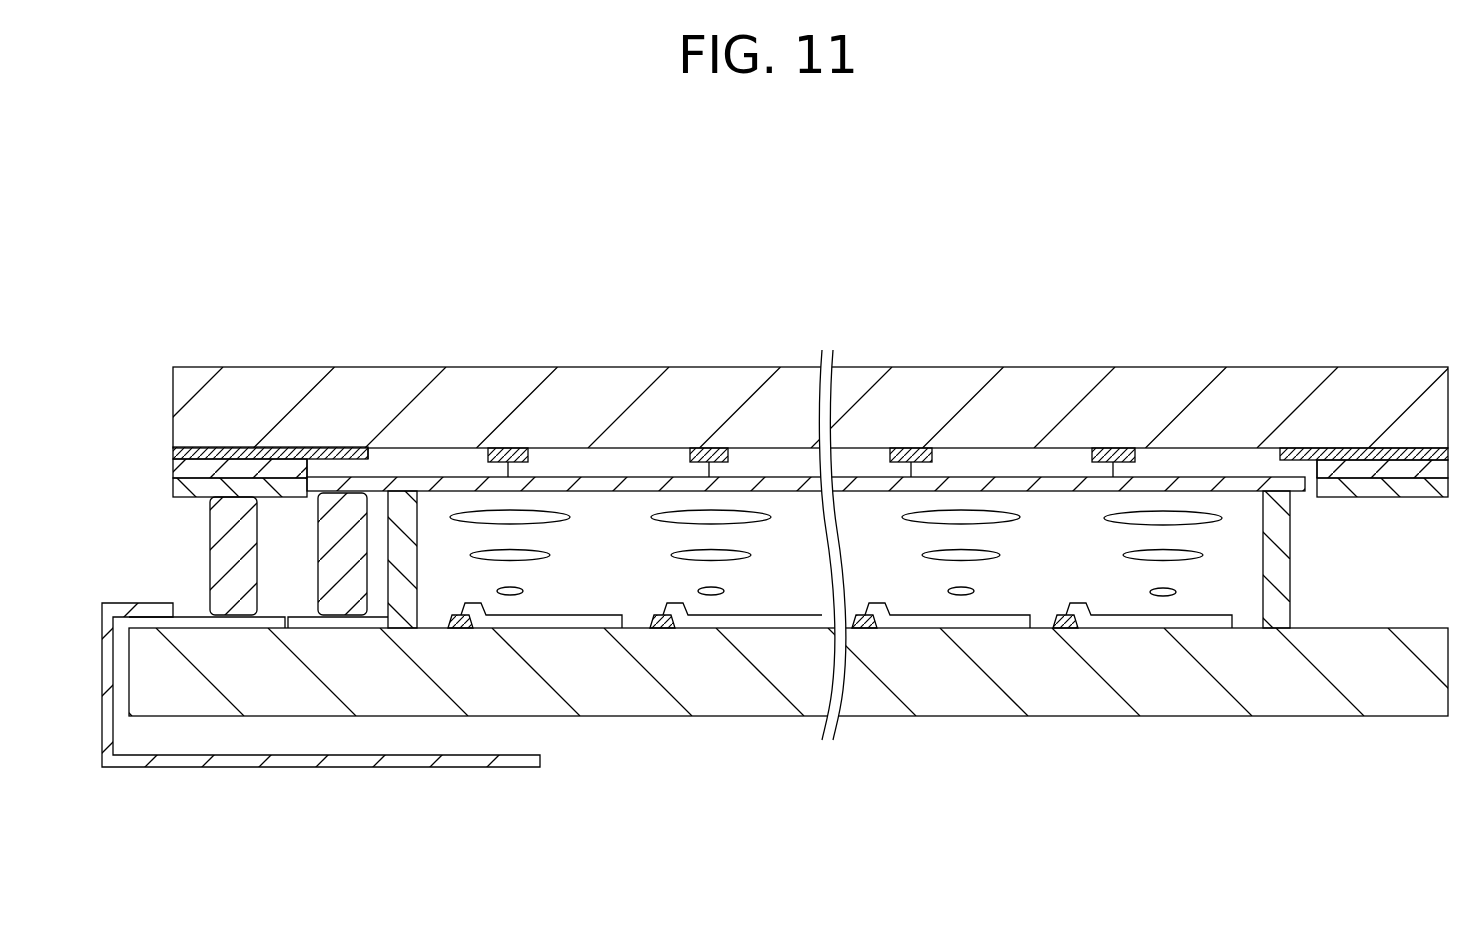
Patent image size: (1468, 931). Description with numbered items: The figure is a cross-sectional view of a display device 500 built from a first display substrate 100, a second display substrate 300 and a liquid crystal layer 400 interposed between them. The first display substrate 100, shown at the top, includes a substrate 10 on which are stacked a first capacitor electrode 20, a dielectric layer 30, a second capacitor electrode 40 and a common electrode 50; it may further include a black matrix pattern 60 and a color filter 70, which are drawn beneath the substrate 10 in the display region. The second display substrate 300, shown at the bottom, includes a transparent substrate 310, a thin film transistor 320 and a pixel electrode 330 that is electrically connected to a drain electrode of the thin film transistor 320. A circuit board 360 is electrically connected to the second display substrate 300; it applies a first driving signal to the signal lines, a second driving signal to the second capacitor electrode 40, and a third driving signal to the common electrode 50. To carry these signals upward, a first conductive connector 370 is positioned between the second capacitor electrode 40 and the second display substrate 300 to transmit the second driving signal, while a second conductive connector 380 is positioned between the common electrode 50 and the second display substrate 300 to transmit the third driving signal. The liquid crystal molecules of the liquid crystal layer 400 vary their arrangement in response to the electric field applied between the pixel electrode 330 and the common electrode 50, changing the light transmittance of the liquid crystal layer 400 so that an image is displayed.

The substrate 10 is at (181, 391).
The first capacitor electrode 20 is at (180, 457).
The dielectric layer 30 is at (180, 469).
The second capacitor electrode 40 is at (182, 486).
The common electrode 50 is at (590, 487).
The black matrix pattern 60 is at (709, 449).
The color filter 70 is at (652, 461).
The first display substrate 100 is at (451, 353).
The second display substrate 300 is at (680, 729).
The transparent substrate 310 is at (985, 697).
The thin film transistor 320 is at (1067, 626).
The pixel electrode 330 is at (1160, 624).
The circuit board 360 is at (167, 764).
The first conductive connector 370 is at (218, 537).
The second conductive connector 380 is at (328, 568).
The liquid crystal layer 400 is at (1214, 553).
The display device 500 is at (802, 281).